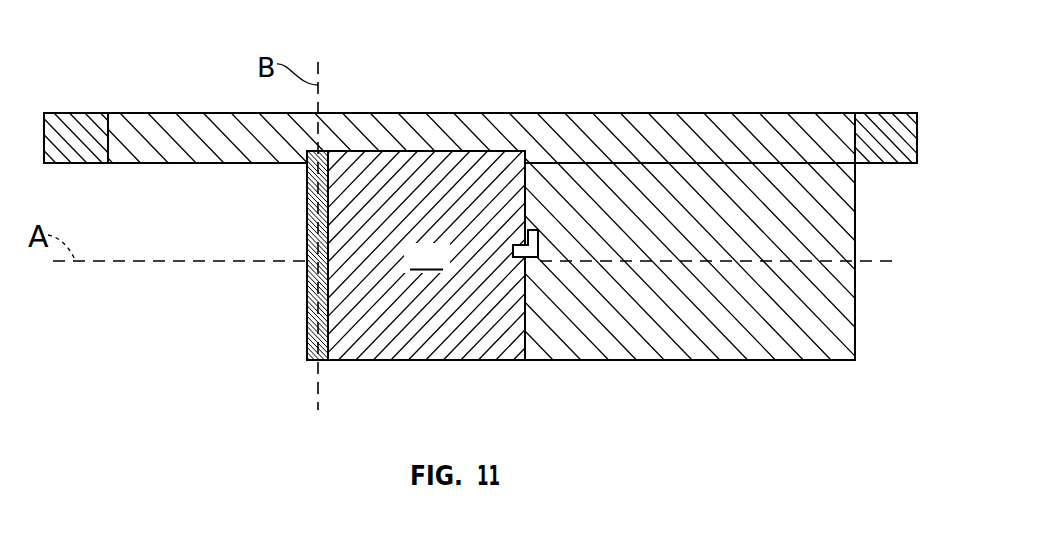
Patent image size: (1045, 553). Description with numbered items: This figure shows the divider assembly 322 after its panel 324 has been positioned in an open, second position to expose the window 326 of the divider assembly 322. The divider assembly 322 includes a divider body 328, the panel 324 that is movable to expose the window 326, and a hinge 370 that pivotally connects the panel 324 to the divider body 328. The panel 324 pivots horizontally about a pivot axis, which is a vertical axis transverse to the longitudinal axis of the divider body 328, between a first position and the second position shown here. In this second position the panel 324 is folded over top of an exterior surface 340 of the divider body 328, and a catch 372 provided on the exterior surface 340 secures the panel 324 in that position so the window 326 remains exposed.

The divider assembly 322 is at (613, 52).
The panel 324 is at (440, 360).
The window 326 is at (197, 238).
The divider body 328 is at (692, 193).
The exterior surface 340 is at (677, 333).
The hinge 370 is at (312, 198).
The catch 372 is at (533, 227).